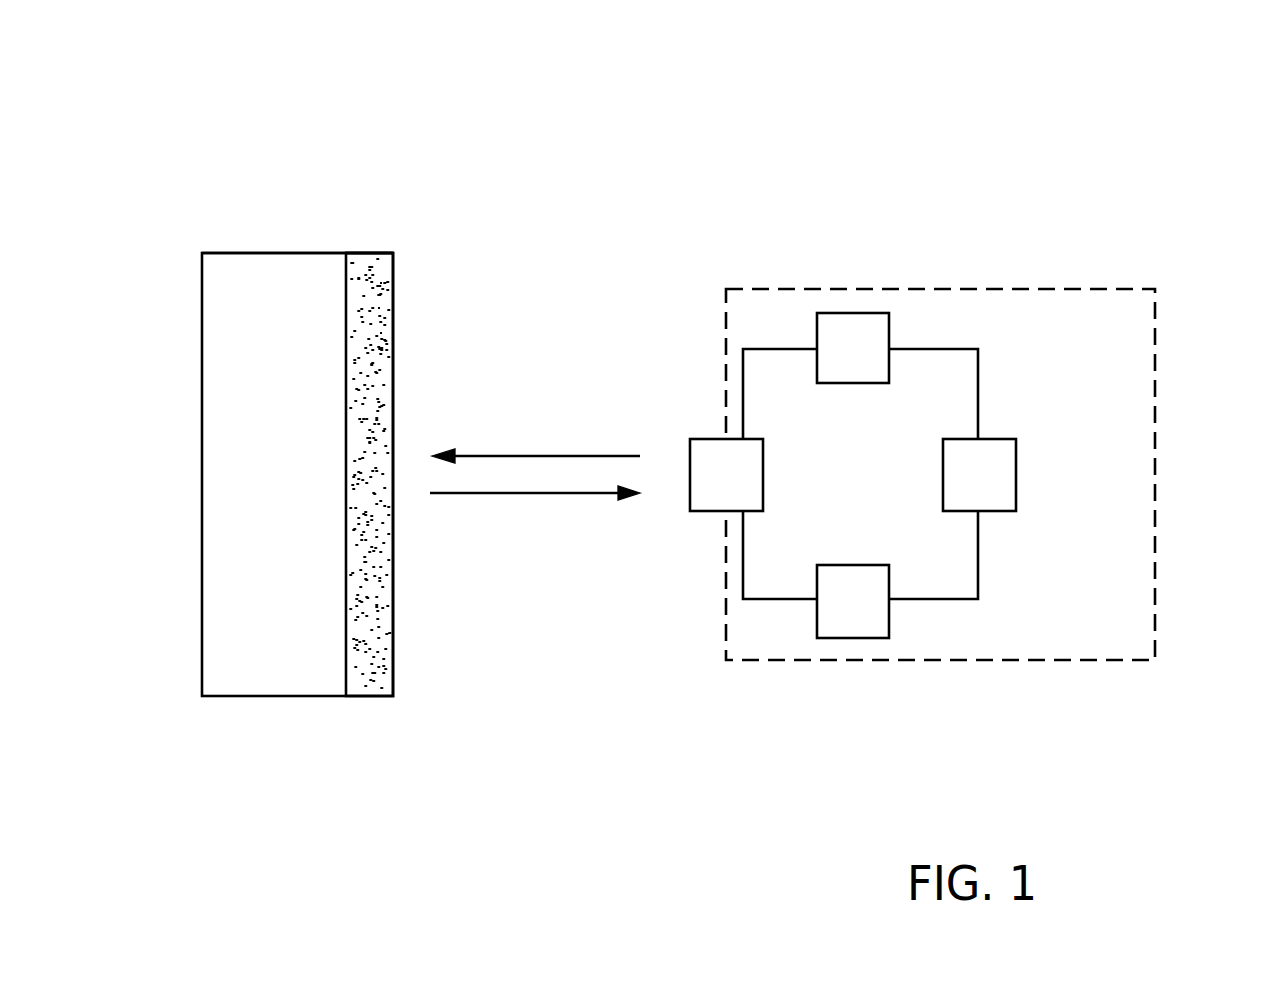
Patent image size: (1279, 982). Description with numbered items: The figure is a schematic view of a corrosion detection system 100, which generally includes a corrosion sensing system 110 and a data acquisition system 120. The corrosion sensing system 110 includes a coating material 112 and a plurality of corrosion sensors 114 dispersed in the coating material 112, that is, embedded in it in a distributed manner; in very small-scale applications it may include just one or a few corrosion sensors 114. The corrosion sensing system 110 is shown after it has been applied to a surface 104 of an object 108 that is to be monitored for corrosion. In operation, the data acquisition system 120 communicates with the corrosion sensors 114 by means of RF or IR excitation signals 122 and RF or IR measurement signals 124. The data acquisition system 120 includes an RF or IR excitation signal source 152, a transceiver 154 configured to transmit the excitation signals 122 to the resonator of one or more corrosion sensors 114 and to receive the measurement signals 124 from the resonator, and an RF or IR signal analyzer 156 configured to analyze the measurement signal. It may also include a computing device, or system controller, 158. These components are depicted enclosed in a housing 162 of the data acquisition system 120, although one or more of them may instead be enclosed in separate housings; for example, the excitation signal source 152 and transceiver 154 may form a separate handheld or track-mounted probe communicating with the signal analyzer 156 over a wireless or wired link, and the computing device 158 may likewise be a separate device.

The corrosion detection system 100 is at (657, 150).
The surface 104 is at (348, 685).
The object 108 is at (278, 697).
The corrosion sensing system 110 is at (375, 197).
The coating material 112 is at (362, 252).
The corrosion sensors 114 is at (380, 333).
The data acquisition system 120 is at (1075, 238).
The excitation signals 122 is at (552, 455).
The measurement signals 124 is at (495, 495).
The excitation signal source 152 is at (869, 312).
The transceiver 154 is at (713, 435).
The signal analyzer 156 is at (845, 640).
The computing device 158 is at (1017, 473).
The housing 162 is at (1157, 356).